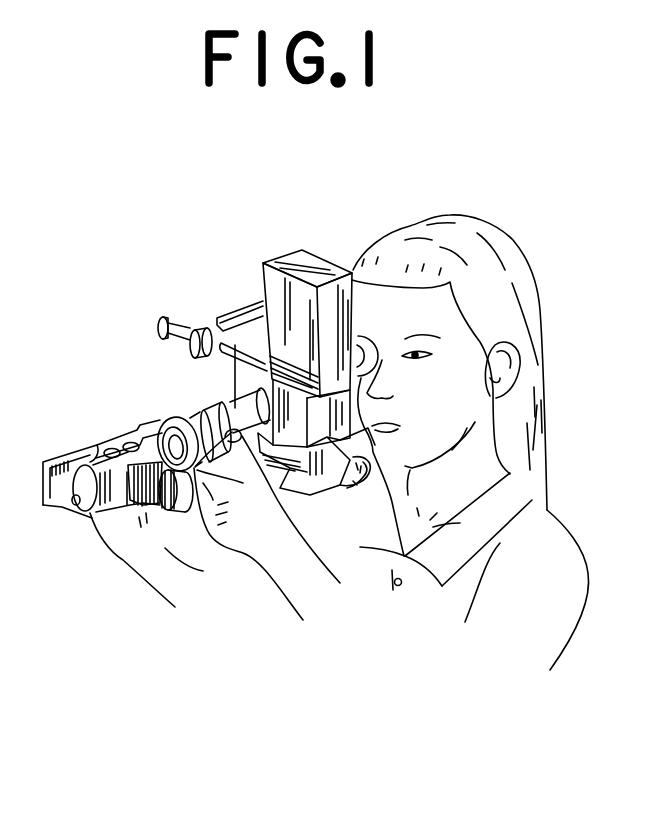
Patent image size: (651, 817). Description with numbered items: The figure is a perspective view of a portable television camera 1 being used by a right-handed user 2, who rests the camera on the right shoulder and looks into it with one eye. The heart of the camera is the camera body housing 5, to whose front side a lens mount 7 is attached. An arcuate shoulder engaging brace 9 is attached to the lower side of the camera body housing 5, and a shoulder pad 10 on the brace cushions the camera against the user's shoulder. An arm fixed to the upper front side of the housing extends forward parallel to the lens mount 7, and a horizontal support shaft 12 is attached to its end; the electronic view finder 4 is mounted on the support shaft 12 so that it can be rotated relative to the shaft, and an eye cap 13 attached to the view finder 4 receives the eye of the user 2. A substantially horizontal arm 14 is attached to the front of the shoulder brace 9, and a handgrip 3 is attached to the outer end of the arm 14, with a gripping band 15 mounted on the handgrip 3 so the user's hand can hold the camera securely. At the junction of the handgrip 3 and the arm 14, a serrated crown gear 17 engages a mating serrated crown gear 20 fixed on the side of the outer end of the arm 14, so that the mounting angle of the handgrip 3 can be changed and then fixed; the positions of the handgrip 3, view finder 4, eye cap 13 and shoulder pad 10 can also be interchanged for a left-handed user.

The portable television camera 1 is at (222, 305).
The right-handed user 2 is at (512, 281).
The handgrip 3 is at (97, 512).
The electronic view finder 4 is at (295, 258).
The camera body housing 5 is at (235, 378).
The lens mount 7 is at (212, 407).
The arcuate shoulder engaging brace 9 is at (340, 498).
The shoulder pad 10 is at (387, 493).
The horizontal support shaft 12 is at (183, 321).
The eye cap 13 is at (370, 354).
The horizontal arm 14 is at (293, 470).
The gripping band 15 is at (50, 494).
The crown gear 17 is at (141, 502).
The crown gear 20 is at (172, 508).